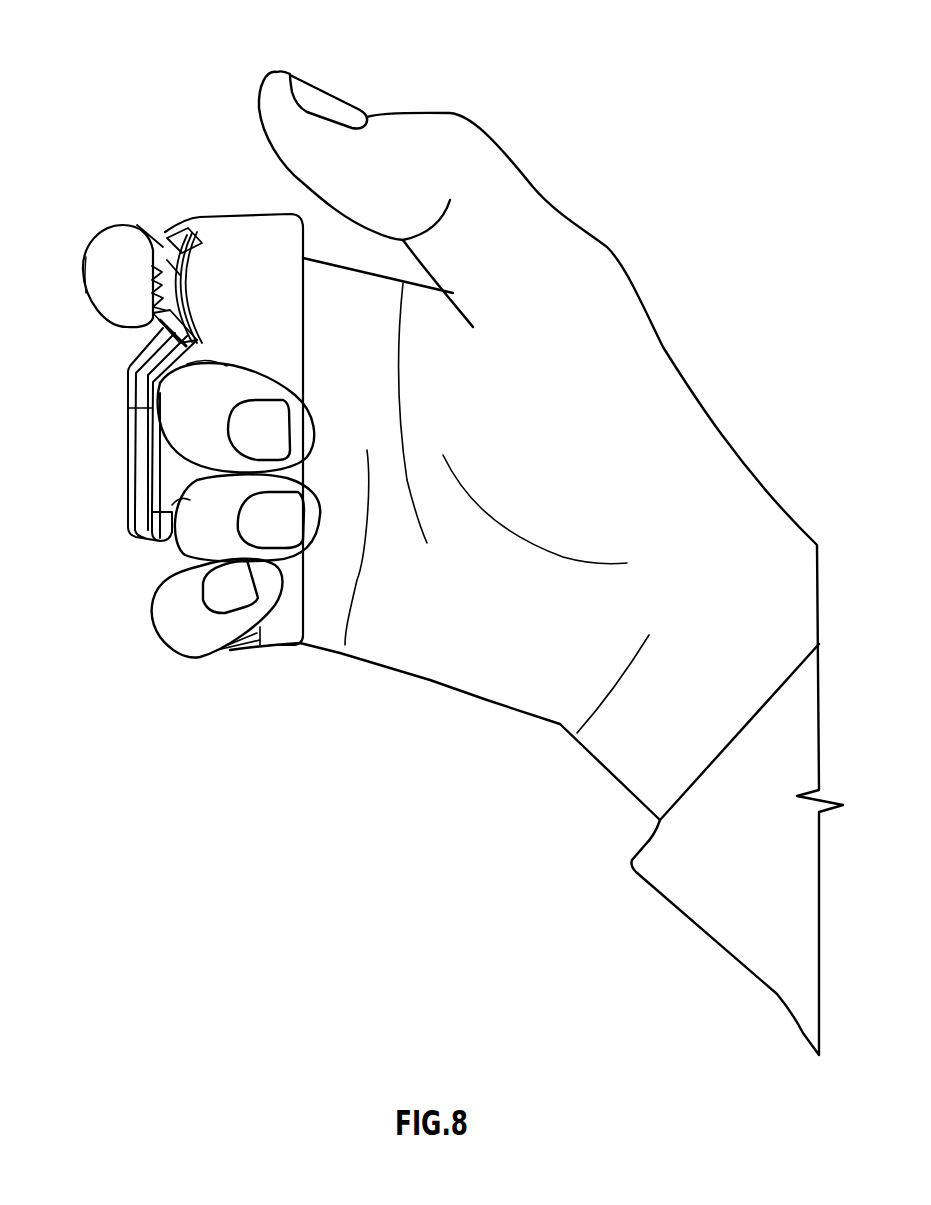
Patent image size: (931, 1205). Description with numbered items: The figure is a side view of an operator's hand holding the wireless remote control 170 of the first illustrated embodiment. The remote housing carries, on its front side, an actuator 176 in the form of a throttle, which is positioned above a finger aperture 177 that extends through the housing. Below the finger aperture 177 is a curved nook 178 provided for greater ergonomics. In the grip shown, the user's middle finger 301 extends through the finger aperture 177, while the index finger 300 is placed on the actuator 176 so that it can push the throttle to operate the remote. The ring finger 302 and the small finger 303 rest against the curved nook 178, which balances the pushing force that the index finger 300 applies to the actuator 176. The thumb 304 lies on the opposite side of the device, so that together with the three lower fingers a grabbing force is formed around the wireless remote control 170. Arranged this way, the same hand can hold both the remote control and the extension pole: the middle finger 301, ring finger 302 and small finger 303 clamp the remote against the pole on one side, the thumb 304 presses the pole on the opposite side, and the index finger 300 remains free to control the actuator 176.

The wireless remote control 170 is at (168, 93).
The actuator 176 is at (168, 266).
The finger aperture 177 is at (170, 377).
The curved nook 178 is at (175, 513).
The index finger 300 is at (110, 232).
The middle finger 301 is at (172, 428).
The ring finger 302 is at (283, 558).
The small finger 303 is at (173, 633).
The thumb 304 is at (323, 100).